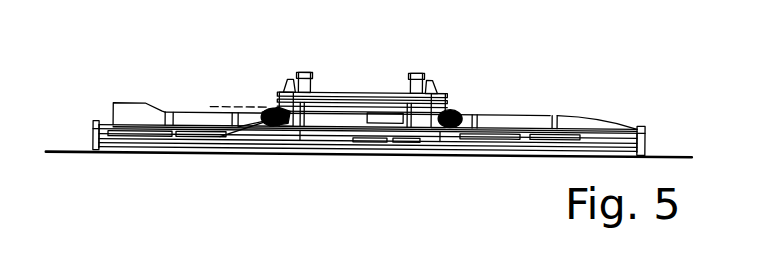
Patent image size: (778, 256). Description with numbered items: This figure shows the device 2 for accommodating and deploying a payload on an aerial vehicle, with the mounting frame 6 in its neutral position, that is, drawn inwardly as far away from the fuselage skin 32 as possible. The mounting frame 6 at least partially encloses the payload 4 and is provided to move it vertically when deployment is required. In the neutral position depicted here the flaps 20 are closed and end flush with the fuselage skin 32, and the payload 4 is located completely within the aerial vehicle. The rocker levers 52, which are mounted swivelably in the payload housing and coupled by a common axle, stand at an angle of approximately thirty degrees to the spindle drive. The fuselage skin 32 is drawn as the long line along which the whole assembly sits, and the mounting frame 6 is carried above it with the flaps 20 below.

The device 2 is at (447, 72).
The payload 4 is at (500, 124).
The mounting frame 6 is at (197, 133).
The flaps 20 is at (144, 166).
The fuselage skin 32 is at (77, 156).
The rocker levers 52 is at (274, 110).